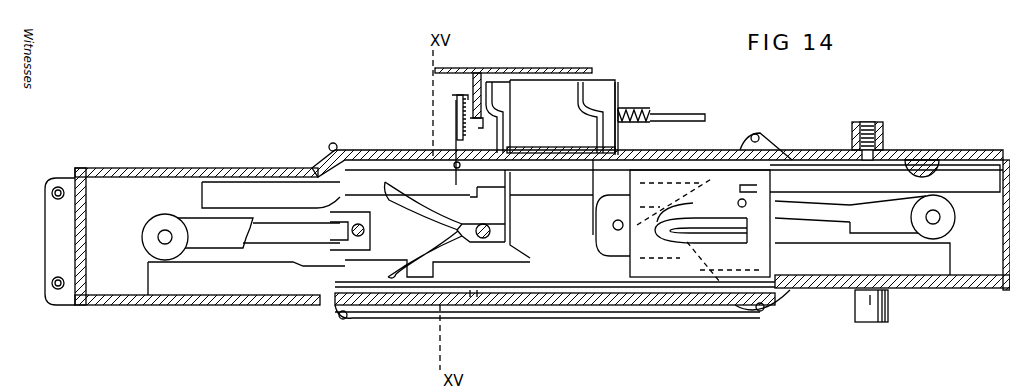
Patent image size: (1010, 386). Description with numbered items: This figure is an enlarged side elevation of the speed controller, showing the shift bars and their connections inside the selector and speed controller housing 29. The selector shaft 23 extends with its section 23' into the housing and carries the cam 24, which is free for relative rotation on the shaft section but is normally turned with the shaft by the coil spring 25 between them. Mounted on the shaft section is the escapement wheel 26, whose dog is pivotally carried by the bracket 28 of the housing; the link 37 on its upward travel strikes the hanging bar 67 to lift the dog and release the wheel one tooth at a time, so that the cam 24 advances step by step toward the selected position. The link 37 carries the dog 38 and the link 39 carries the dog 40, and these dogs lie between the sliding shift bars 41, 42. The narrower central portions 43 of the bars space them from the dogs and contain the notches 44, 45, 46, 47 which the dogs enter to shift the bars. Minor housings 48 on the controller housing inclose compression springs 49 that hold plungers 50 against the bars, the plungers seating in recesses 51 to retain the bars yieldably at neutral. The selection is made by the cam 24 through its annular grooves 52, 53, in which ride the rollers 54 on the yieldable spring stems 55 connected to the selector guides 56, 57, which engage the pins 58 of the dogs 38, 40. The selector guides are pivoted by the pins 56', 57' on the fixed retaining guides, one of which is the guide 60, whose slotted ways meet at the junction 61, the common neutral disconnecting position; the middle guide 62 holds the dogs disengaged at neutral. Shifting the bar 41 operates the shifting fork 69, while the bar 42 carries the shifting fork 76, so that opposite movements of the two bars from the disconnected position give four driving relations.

The selector shaft 23 is at (701, 92).
The selector shaft section 23' is at (562, 107).
The cam 24 is at (612, 82).
The coil spring 25 is at (647, 112).
The escapement wheel 26 is at (457, 128).
The bracket 28 is at (477, 90).
The selector and speed controller housing 29 is at (483, 67).
The link 37 is at (220, 253).
The dog 38 is at (290, 247).
The link 39 is at (887, 233).
The dog 40 is at (817, 222).
The shift bar 41 is at (238, 180).
The shift bar 42 is at (173, 285).
The narrower central portion 43 is at (528, 262).
The notch 44 is at (510, 184).
The notch 45 is at (423, 270).
The notch 46 is at (757, 186).
The notch 47 is at (683, 265).
The minor housing 48 is at (888, 316).
The compression spring 49 is at (866, 122).
The plunger 50 is at (873, 153).
The recess 51 is at (923, 160).
The annular groove 52 is at (512, 90).
The annular groove 53 is at (578, 83).
The roller 54 is at (587, 147).
The spring stem 55 is at (505, 181).
The selector guide 56 is at (451, 257).
The pin 56' is at (495, 242).
The selector guide 57 is at (770, 323).
The pin 57' is at (604, 238).
The pin 58 is at (368, 232).
The fixed retaining guide 60 is at (770, 278).
The junction 61 is at (662, 212).
The middle guide 62 is at (746, 228).
The hanging bar 67 is at (457, 158).
The shifting fork 69 is at (700, 144).
The shifting fork 76 is at (443, 290).